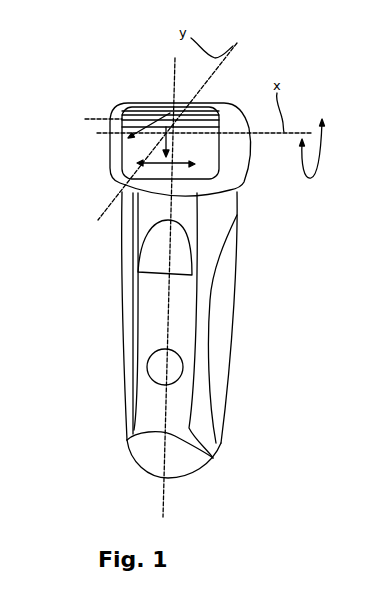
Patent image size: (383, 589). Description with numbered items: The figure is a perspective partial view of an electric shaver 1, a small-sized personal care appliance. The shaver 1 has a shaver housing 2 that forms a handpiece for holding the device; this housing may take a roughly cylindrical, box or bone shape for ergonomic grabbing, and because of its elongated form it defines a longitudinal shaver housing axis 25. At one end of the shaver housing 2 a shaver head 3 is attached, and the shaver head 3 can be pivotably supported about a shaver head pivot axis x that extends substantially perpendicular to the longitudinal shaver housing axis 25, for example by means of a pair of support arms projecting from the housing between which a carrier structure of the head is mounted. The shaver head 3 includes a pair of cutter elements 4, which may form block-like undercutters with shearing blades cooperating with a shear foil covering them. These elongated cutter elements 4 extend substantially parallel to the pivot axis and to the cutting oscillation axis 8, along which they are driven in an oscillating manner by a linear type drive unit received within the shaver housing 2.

The shaver 1 is at (265, 257).
The shaver housing 2 is at (237, 332).
The shaver head 3 is at (107, 152).
The cutter elements 4 is at (112, 118).
The cutting oscillation axis 8 is at (196, 163).
The longitudinal shaver housing axis 25 is at (163, 504).